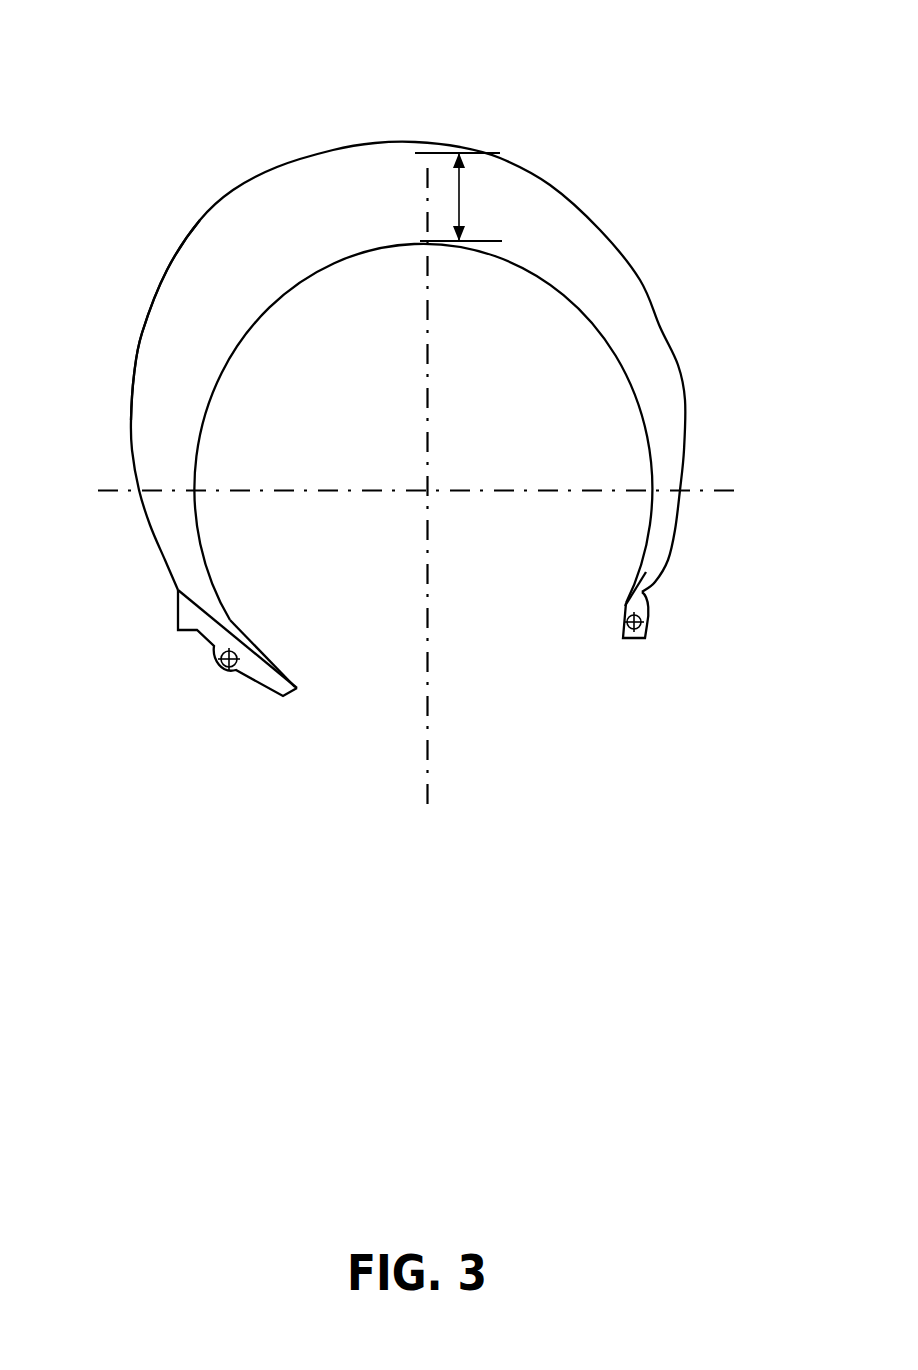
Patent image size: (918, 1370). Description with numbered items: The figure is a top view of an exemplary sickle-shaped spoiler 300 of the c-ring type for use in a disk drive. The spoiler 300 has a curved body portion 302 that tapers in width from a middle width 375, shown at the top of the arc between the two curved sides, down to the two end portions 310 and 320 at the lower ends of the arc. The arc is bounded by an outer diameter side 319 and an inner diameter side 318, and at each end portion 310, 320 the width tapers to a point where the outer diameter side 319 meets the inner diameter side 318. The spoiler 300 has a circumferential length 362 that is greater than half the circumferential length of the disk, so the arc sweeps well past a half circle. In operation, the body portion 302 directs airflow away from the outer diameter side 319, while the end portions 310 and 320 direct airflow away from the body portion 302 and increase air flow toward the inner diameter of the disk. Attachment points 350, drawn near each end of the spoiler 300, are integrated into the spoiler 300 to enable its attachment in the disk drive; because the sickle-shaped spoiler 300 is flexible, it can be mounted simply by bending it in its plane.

The sickle-shaped spoiler 300 is at (208, 46).
The body portion 302 is at (534, 240).
The end portion 310 is at (645, 564).
The inner diameter side 318 is at (347, 260).
The outer diameter side 319 is at (308, 157).
The end portion 320 is at (225, 627).
The attachment points 350 is at (229, 668).
The circumferential length 362 is at (142, 333).
The middle width 375 is at (459, 201).